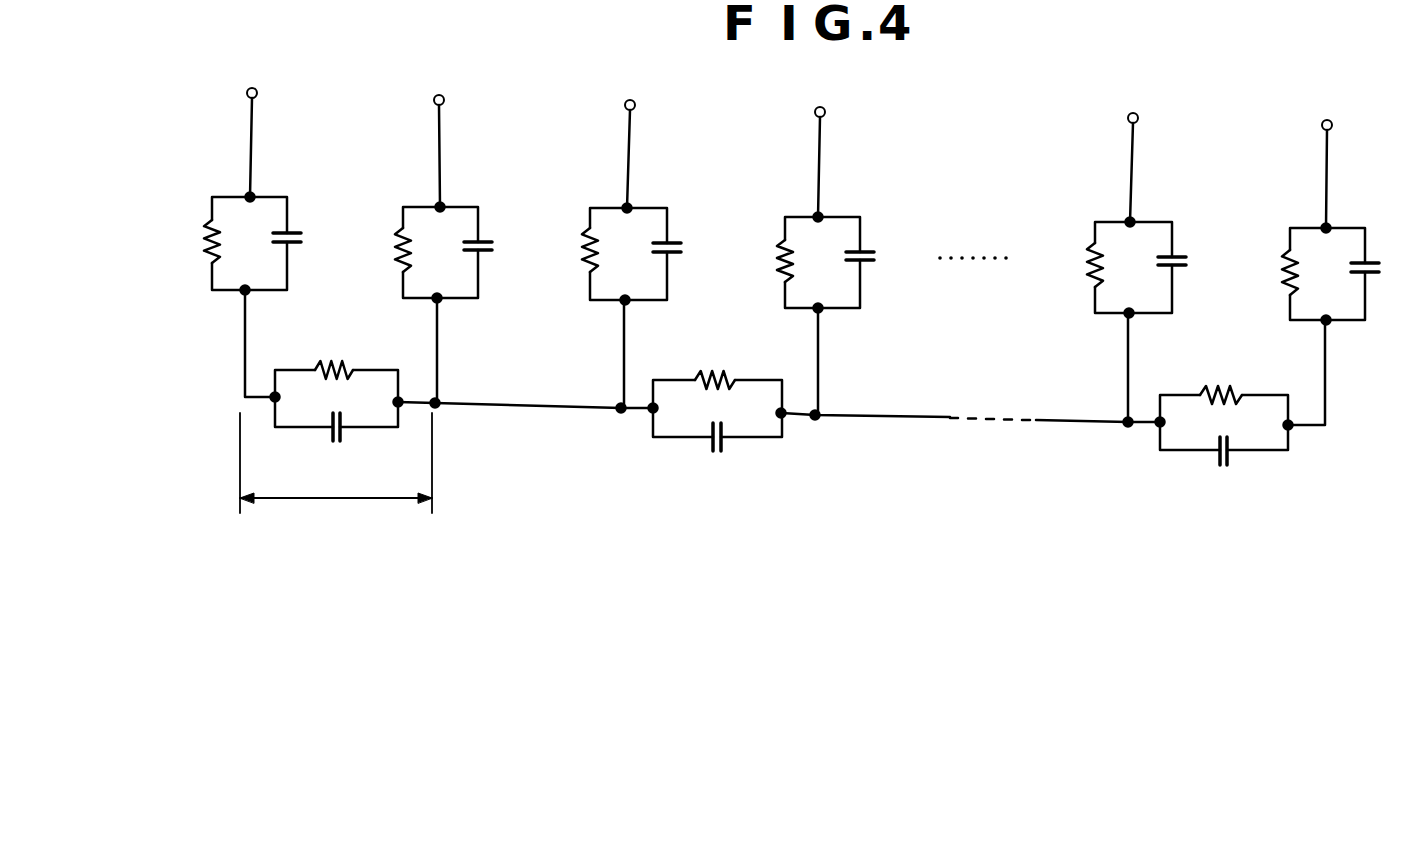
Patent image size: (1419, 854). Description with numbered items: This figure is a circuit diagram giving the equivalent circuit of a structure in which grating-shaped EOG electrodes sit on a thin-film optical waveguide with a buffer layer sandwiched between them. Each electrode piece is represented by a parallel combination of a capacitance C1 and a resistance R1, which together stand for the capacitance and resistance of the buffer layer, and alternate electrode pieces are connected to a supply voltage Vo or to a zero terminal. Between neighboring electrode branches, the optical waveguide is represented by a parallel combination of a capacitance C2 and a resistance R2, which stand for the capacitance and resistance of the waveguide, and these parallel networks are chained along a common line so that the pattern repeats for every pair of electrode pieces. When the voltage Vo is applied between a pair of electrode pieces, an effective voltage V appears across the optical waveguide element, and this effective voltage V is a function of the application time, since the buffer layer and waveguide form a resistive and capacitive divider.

The resistance of the buffer layer R1 is at (734, 255).
The capacitance of the buffer layer C1 is at (846, 253).
The resistance of the optical waveguide R2 is at (778, 364).
The capacitance of the optical waveguide C2 is at (782, 422).
The effective voltage V is at (336, 463).
The applied voltage Vo is at (797, 92).